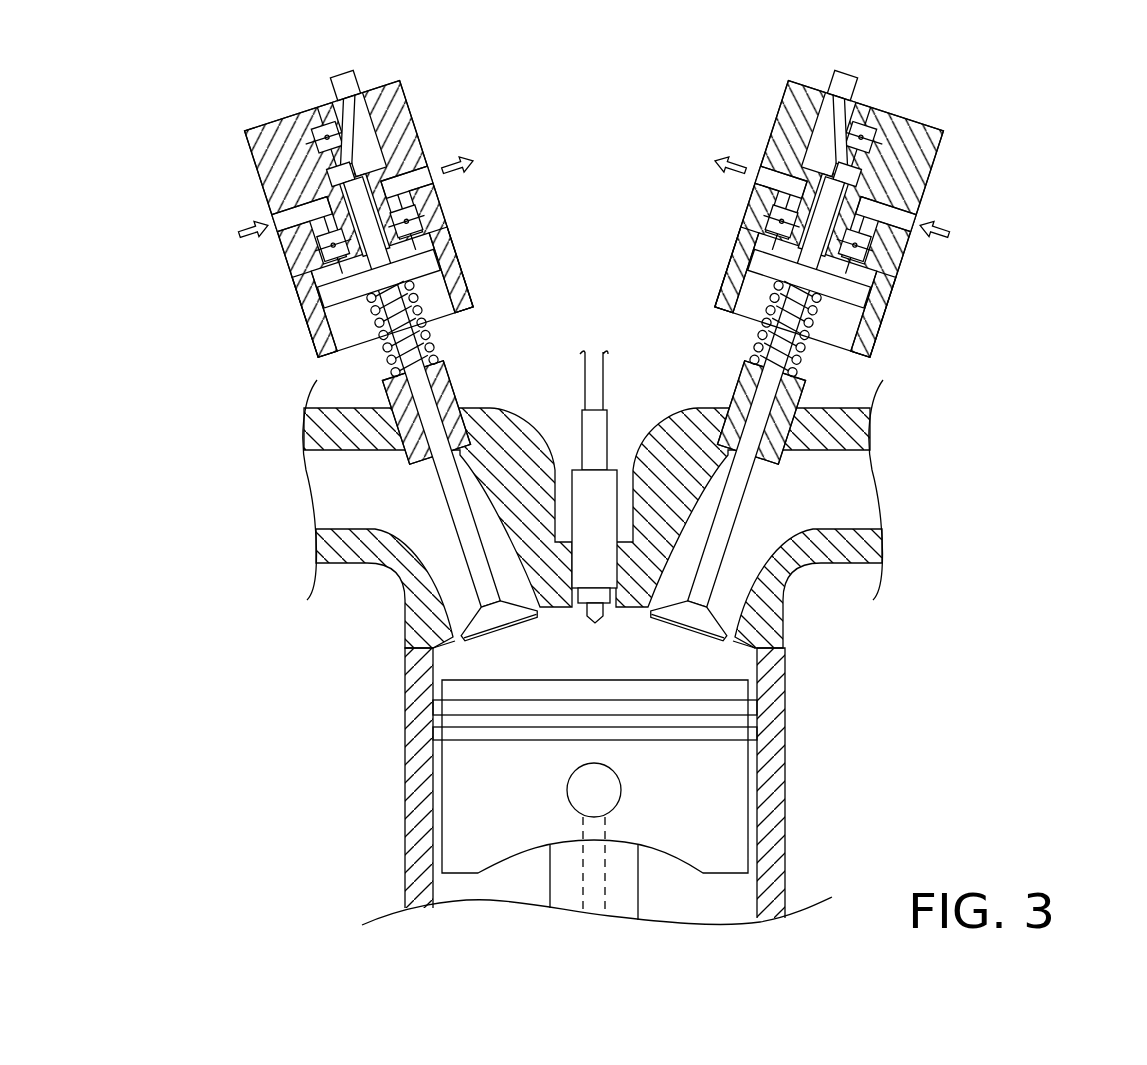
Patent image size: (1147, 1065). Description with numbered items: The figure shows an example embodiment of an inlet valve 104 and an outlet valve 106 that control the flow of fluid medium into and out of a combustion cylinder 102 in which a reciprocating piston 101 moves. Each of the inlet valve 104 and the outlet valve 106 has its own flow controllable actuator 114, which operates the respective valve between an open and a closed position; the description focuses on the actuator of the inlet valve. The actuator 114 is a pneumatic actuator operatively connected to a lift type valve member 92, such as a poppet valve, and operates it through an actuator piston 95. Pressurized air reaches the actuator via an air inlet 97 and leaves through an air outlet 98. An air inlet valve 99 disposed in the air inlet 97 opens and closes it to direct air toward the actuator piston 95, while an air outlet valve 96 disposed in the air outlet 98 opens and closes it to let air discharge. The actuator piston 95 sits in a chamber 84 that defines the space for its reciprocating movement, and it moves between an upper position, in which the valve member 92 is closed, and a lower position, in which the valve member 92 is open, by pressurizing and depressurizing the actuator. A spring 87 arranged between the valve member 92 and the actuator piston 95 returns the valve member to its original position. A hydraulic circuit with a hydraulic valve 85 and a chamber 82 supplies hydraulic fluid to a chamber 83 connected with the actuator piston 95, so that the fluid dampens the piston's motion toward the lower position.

The chamber 82 is at (841, 70).
The chamber 83 is at (901, 188).
The chamber 84 is at (882, 294).
The hydraulic valve 85 is at (867, 127).
The spring 87 is at (752, 345).
The valve member 92 is at (767, 394).
The actuator piston 95 is at (760, 262).
The air outlet valve 96 is at (778, 228).
The air inlet 97 is at (907, 249).
The air outlet 98 is at (751, 176).
The air inlet valve 99 is at (887, 270).
The reciprocating piston 101 is at (710, 782).
The combustion cylinder 102 is at (787, 822).
The inlet valve 104 is at (188, 245).
The outlet valve 106 is at (1000, 245).
The flow controllable actuator 114 is at (780, 88).